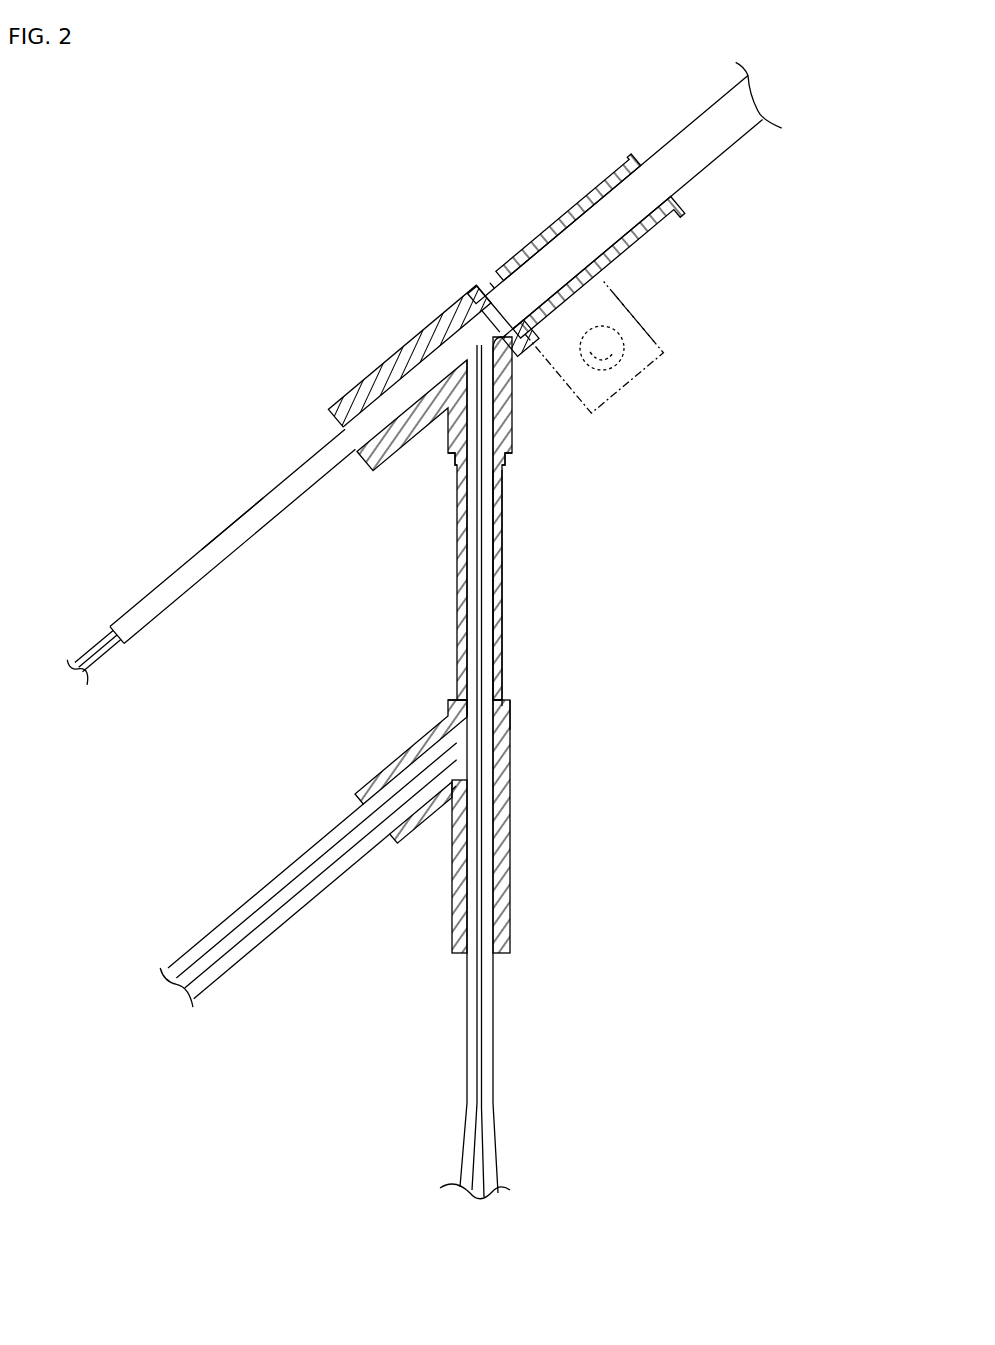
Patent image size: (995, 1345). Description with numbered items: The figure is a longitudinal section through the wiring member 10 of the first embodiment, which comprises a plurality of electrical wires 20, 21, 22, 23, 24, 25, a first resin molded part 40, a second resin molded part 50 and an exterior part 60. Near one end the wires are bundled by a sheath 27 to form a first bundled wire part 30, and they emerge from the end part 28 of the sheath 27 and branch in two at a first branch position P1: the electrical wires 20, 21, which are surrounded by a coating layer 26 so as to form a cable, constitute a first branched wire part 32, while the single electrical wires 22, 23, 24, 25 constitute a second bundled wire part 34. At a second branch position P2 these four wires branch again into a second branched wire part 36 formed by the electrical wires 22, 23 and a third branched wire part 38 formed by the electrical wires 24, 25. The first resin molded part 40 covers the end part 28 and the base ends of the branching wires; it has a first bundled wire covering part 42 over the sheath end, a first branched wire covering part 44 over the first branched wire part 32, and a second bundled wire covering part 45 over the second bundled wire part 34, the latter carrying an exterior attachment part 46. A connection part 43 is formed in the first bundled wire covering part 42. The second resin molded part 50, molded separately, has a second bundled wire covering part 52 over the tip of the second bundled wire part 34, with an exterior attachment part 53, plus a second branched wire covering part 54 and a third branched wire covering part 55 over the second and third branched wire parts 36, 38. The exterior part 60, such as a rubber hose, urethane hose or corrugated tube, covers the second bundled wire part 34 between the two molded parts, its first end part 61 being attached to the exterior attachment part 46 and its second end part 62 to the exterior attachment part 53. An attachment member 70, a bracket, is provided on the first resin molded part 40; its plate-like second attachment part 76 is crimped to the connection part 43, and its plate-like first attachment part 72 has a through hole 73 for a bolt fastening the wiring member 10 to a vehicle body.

The wiring member 10 is at (377, 177).
The electrical wire 20 is at (208, 564).
The electrical wire 21 is at (96, 648).
The electrical wire 22 is at (318, 880).
The electrical wire 23 is at (321, 874).
The electrical wire 24 is at (468, 1064).
The electrical wire 25 is at (494, 1063).
The coating layer 26 is at (234, 536).
The sheath 27 is at (676, 128).
The end part of the sheath 28 is at (483, 283).
The first bundled wire part 30 is at (631, 202).
The first branched wire part 32 is at (232, 523).
The second bundled wire part 34 is at (507, 543).
The second branched wire part 36 is at (267, 893).
The third branched wire part 38 is at (492, 768).
The first resin molded part 40 is at (454, 486).
The first bundled wire covering part 42 is at (527, 352).
The connection part 43 is at (527, 243).
The first branched wire covering part 44 is at (388, 354).
The second bundled wire covering part 45 is at (512, 427).
The exterior attachment part 46 is at (448, 460).
The second resin molded part 50 is at (468, 817).
The second bundled wire covering part 52 is at (512, 710).
The exterior attachment part 53 is at (447, 707).
The second branched wire covering part 54 is at (397, 773).
The third branched wire covering part 55 is at (507, 871).
The exterior part 60 is at (503, 600).
The first end part 61 is at (508, 462).
The second end part 62 is at (506, 703).
The attachment member 70 is at (631, 362).
The first attachment part 72 is at (634, 318).
The through hole 73 is at (606, 372).
The second attachment part 76 is at (506, 246).
The first branch position P1 is at (452, 302).
The second branch position P2 is at (449, 796).